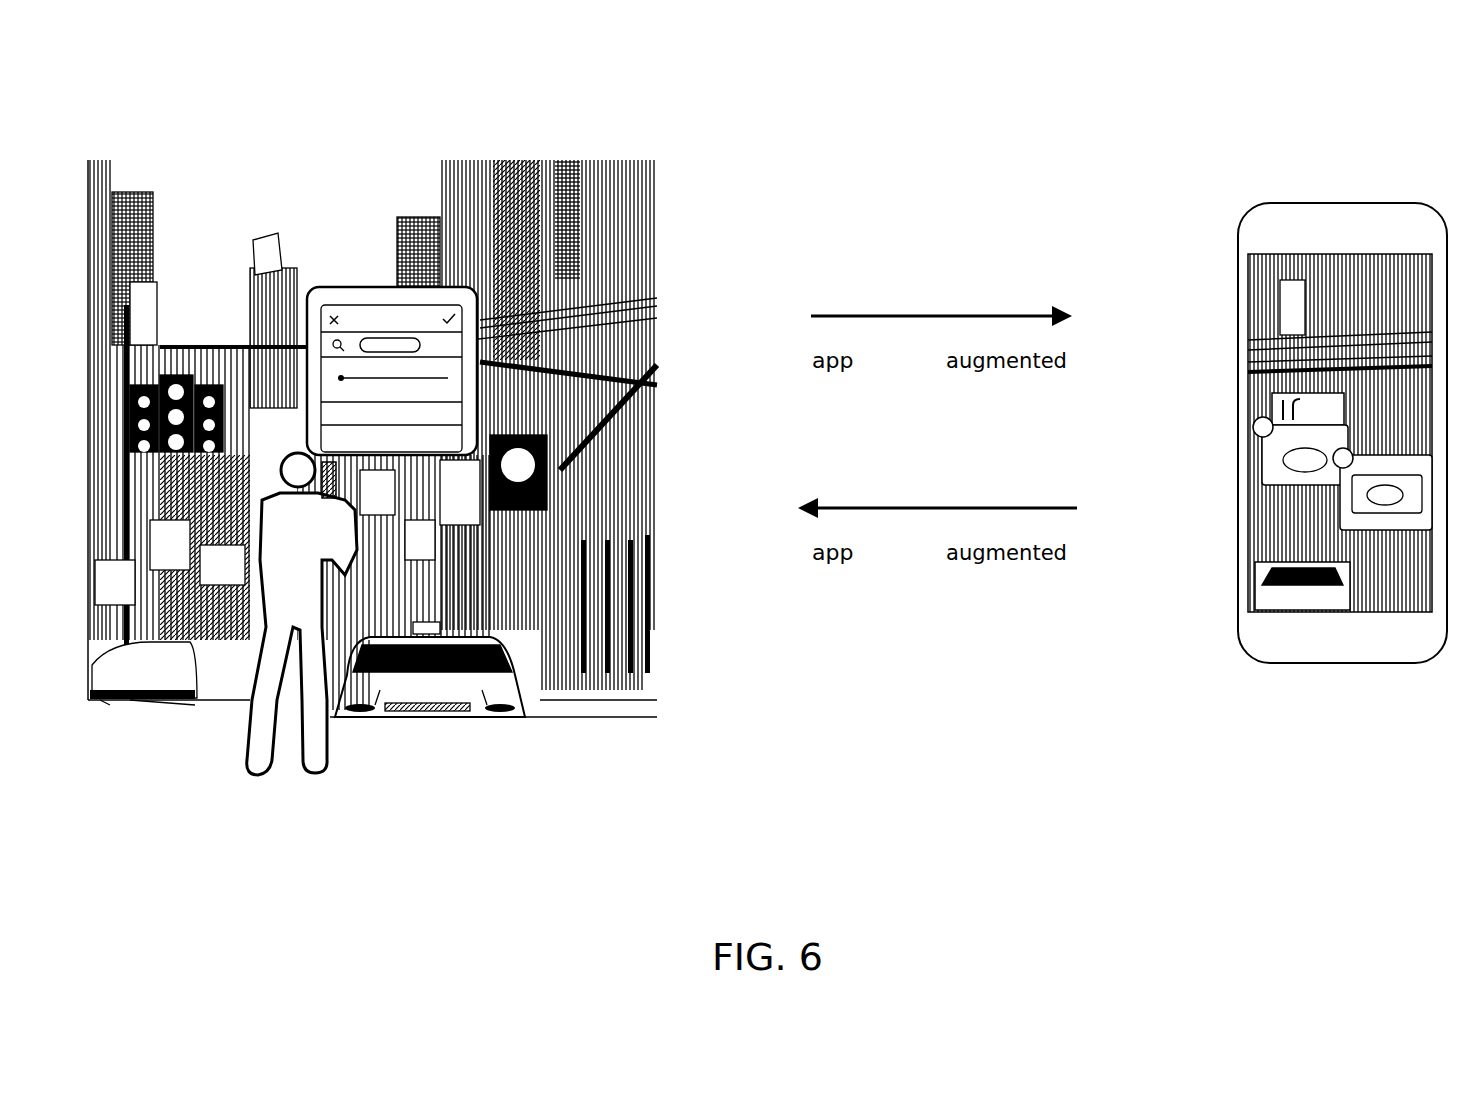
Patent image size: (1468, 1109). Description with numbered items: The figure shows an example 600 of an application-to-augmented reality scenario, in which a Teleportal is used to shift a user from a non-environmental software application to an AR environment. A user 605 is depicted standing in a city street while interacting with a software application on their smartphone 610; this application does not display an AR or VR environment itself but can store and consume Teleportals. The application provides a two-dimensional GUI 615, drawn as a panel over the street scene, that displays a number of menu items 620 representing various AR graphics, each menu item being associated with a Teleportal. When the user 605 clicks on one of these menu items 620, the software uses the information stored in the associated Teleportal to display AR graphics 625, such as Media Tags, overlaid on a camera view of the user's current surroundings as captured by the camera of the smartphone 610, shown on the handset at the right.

The example 600 is at (202, 128).
The user 605 is at (346, 724).
The smartphone 610 is at (337, 450).
The 2D GUI 615 is at (368, 276).
The menu items 620 is at (460, 345).
The AR graphics 625 is at (1256, 401).